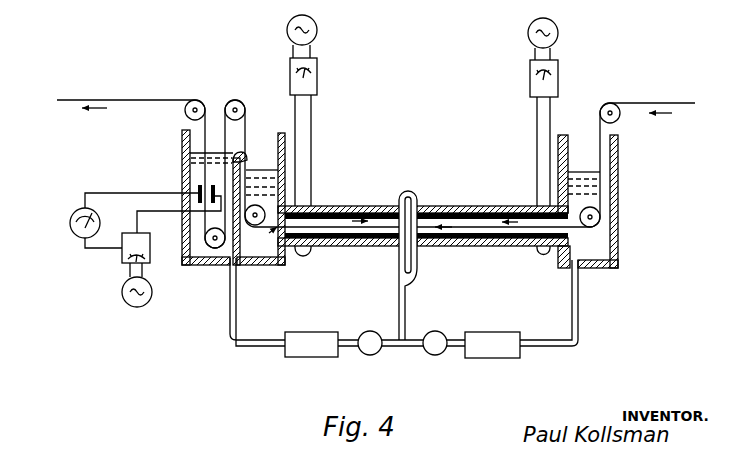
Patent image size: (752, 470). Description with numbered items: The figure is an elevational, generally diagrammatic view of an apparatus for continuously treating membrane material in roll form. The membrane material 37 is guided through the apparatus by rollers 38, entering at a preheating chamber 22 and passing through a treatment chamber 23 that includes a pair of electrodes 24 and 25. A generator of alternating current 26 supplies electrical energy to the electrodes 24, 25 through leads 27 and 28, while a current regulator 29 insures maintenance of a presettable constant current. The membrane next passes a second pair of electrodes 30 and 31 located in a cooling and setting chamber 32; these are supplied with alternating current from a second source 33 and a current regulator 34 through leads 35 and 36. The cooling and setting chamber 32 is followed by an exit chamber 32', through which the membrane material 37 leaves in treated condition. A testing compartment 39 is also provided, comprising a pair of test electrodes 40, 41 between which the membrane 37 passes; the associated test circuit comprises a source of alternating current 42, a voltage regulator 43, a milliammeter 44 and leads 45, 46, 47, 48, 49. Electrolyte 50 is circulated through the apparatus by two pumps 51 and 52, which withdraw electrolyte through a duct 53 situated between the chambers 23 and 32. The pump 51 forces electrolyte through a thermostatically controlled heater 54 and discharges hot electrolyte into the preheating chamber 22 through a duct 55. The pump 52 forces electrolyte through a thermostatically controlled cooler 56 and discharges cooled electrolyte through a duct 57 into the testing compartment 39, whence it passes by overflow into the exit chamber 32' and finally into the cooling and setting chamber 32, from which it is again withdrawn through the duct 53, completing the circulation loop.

The preheating chamber 22 is at (603, 247).
The treatment chamber 23 is at (488, 246).
The electrode 24 is at (487, 206).
The electrode 25 is at (462, 246).
The generator of alternating current 26 is at (528, 33).
The lead 27 is at (551, 111).
The lead 28 is at (537, 114).
The current regulator 29 is at (530, 77).
The electrode 30 is at (338, 207).
The electrode 31 is at (338, 246).
The cooling and setting chamber 32 is at (360, 251).
The exit chamber 32' is at (261, 216).
The second source of alternating current 33 is at (318, 28).
The current regulator 34 is at (290, 72).
The lead 35 is at (294, 107).
The lead 36 is at (312, 107).
The membrane material 37 is at (248, 131).
The rollers 38 is at (620, 119).
The testing compartment 39 is at (206, 253).
The test electrode 40 is at (198, 186).
The test electrode 41 is at (214, 186).
The source of alternating current 42 is at (130, 305).
The voltage regulator 43 is at (149, 245).
The milliammeter 44 is at (70, 224).
The lead 45 is at (137, 214).
The lead 46 is at (142, 268).
The lead 47 is at (130, 268).
The lead 48 is at (85, 250).
The lead 49 is at (135, 193).
The electrolyte 50 is at (213, 152).
The pump 51 is at (439, 355).
The pump 52 is at (376, 355).
The duct 53 is at (406, 308).
The thermostatically controlled heater 54 is at (512, 332).
The duct 55 is at (580, 318).
The thermostatically controlled cooler 56 is at (329, 332).
The duct 57 is at (270, 347).